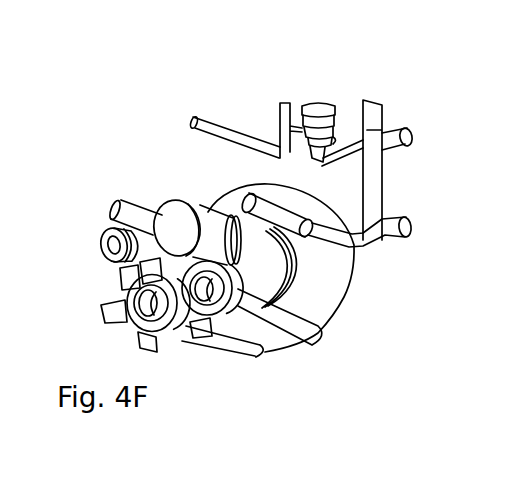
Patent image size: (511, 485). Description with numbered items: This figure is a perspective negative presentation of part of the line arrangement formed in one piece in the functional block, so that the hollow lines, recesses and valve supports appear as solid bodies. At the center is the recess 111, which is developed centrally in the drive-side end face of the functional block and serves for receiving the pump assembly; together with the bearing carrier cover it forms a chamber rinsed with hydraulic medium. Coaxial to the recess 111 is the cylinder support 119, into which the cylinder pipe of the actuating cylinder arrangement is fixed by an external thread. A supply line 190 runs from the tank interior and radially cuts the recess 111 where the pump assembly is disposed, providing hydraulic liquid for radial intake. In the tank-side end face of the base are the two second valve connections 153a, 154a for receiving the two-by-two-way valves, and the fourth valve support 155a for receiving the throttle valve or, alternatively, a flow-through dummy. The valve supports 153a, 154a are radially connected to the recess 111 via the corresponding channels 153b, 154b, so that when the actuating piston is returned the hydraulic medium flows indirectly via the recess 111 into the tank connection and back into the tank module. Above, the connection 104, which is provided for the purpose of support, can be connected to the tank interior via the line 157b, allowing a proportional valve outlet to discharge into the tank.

The connection 104 is at (315, 103).
The recess 111 is at (328, 301).
The cylinder support 119 is at (172, 206).
The supply line 190 is at (107, 203).
The fourth valve support 155a is at (73, 244).
The second valve connection 153a is at (179, 334).
The channel 153b is at (257, 349).
The second valve connection 154a is at (213, 314).
The channel 154b is at (302, 323).
The line 157b is at (236, 133).